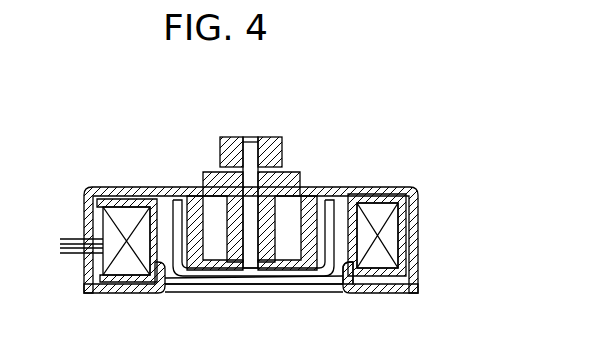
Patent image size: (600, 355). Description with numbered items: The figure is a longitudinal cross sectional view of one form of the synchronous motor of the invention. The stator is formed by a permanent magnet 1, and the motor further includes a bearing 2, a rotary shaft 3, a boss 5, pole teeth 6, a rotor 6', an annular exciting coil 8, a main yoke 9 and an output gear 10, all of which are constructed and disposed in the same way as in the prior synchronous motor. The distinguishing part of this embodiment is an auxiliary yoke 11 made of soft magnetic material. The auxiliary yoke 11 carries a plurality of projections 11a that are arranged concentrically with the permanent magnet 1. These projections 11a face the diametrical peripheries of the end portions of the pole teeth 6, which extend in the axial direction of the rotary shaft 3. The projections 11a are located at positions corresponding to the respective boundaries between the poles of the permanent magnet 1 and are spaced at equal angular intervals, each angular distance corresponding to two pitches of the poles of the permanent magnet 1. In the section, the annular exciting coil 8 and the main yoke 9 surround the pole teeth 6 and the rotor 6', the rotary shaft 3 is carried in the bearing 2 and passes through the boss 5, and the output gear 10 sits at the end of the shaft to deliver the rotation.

The permanent magnet 1 is at (305, 206).
The bearing 2 is at (288, 170).
The rotary shaft 3 is at (247, 136).
The boss 5 is at (248, 280).
The pole teeth 6 is at (324, 206).
The rotor 6' is at (211, 269).
The annular exciting coil 8 is at (390, 233).
The main yoke 9 is at (127, 188).
The output gear 10 is at (226, 141).
The auxiliary yoke 11 is at (117, 291).
The projections 11a is at (346, 265).